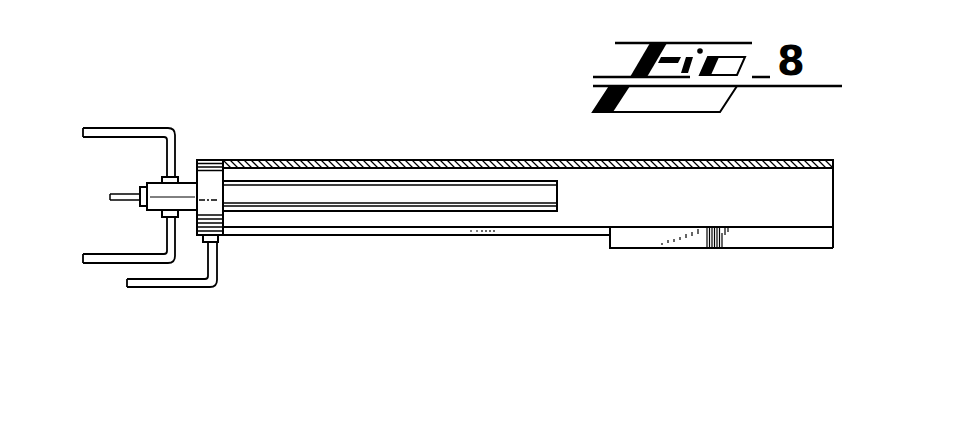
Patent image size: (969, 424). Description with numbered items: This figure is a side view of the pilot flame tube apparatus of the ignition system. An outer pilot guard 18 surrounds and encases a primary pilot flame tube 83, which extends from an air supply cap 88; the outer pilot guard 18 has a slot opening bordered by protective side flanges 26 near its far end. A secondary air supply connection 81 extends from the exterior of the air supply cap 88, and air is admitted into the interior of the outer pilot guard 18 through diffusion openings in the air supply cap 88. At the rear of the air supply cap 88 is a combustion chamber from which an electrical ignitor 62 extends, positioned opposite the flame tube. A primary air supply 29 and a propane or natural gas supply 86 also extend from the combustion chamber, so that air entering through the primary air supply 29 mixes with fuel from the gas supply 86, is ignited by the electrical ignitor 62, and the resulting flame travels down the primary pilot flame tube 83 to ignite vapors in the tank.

The outer pilot guard 18 is at (498, 235).
The protective side flanges 26 is at (658, 250).
The primary air supply 29 is at (117, 128).
The electrical ignitor 62 is at (122, 196).
The secondary air supply connection 81 is at (162, 288).
The primary pilot flame tube 83 is at (423, 183).
The propane or natural gas supply 86 is at (100, 264).
The air supply cap 88 is at (207, 159).